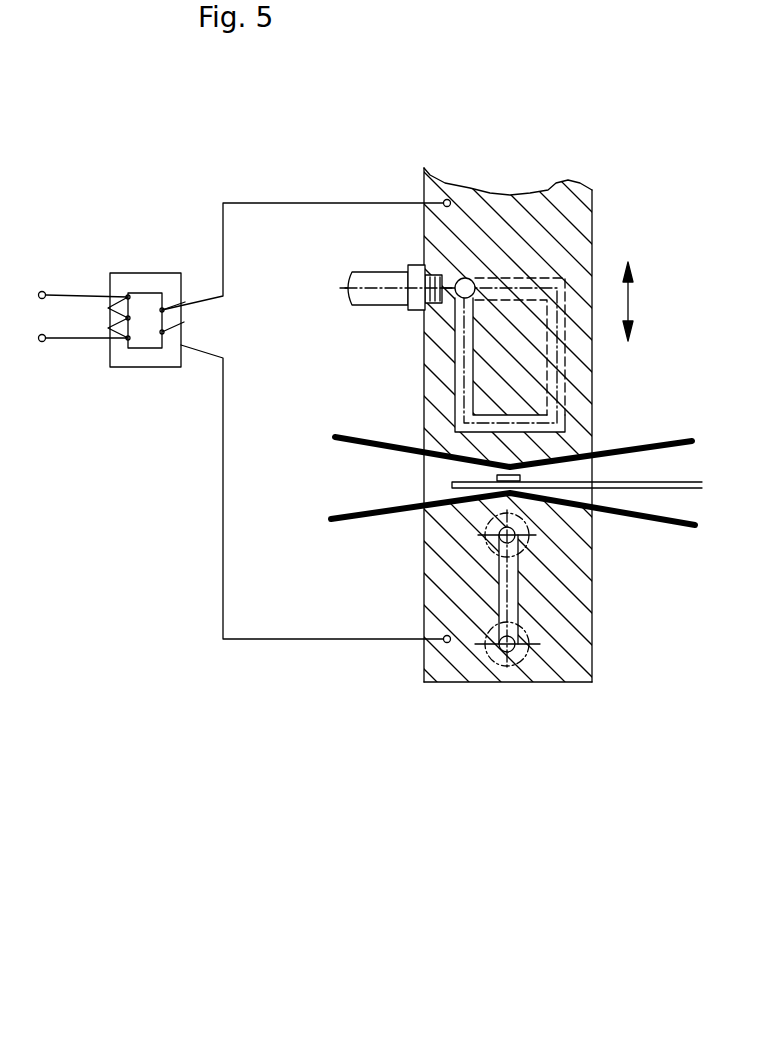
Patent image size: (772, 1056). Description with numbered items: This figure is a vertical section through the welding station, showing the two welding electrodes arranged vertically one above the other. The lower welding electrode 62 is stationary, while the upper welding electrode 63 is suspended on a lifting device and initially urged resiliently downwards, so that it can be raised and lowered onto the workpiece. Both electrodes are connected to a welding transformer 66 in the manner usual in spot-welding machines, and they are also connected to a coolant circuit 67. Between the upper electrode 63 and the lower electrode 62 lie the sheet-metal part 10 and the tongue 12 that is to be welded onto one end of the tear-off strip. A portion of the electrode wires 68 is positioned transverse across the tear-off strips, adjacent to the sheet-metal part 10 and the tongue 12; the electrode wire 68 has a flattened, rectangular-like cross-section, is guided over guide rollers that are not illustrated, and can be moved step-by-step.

The sheet-metal part 10 is at (630, 488).
The tongue 12 is at (492, 477).
The lower welding electrode 62 is at (474, 662).
The upper welding electrode 63 is at (490, 200).
The welding transformer 66 is at (139, 357).
The coolant circuit 67 is at (372, 296).
The electrode wire 68 is at (360, 517).